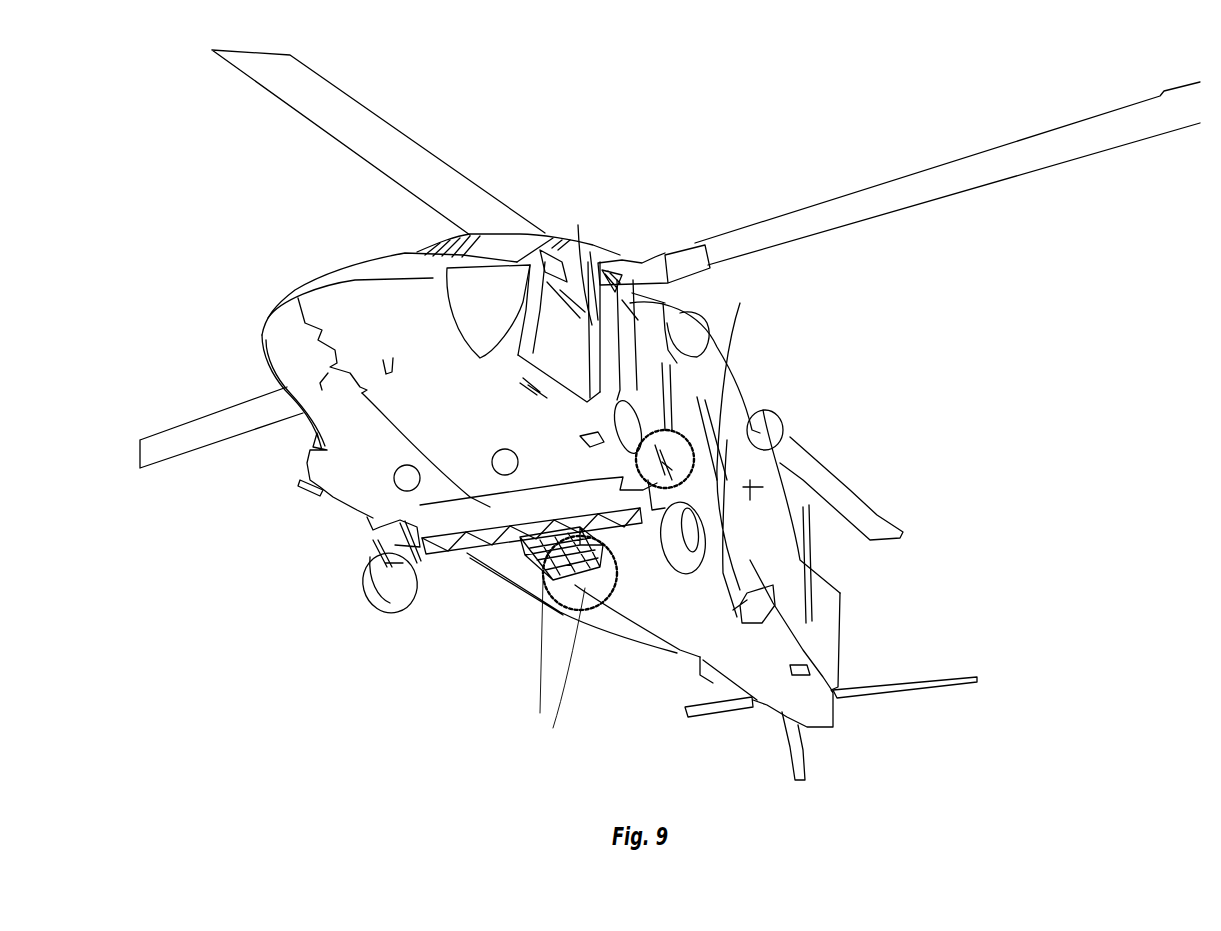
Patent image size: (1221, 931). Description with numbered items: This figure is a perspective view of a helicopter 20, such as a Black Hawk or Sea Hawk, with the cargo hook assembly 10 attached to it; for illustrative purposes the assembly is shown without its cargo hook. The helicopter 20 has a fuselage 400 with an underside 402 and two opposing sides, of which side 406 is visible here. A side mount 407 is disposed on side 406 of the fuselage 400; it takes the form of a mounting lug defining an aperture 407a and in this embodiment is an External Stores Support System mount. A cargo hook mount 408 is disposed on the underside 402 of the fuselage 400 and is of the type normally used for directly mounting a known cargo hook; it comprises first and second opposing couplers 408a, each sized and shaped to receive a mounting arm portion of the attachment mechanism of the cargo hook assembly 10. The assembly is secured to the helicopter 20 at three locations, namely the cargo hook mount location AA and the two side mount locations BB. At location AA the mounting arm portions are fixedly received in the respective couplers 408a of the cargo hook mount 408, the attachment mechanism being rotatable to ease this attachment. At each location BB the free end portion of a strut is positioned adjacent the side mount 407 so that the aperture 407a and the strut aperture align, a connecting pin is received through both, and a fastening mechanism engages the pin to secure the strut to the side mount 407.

The cargo hook assembly 10 is at (441, 550).
The helicopter 20 is at (447, 152).
The fuselage 400 is at (320, 275).
The underside 402 is at (380, 465).
The opposing side 406 is at (735, 538).
The side mount 407 is at (670, 453).
The aperture 407a is at (677, 460).
The cargo hook mount 408 is at (603, 547).
The coupler 408a is at (559, 689).
The cargo hook mount location AA is at (588, 612).
The side mount location BB is at (700, 460).